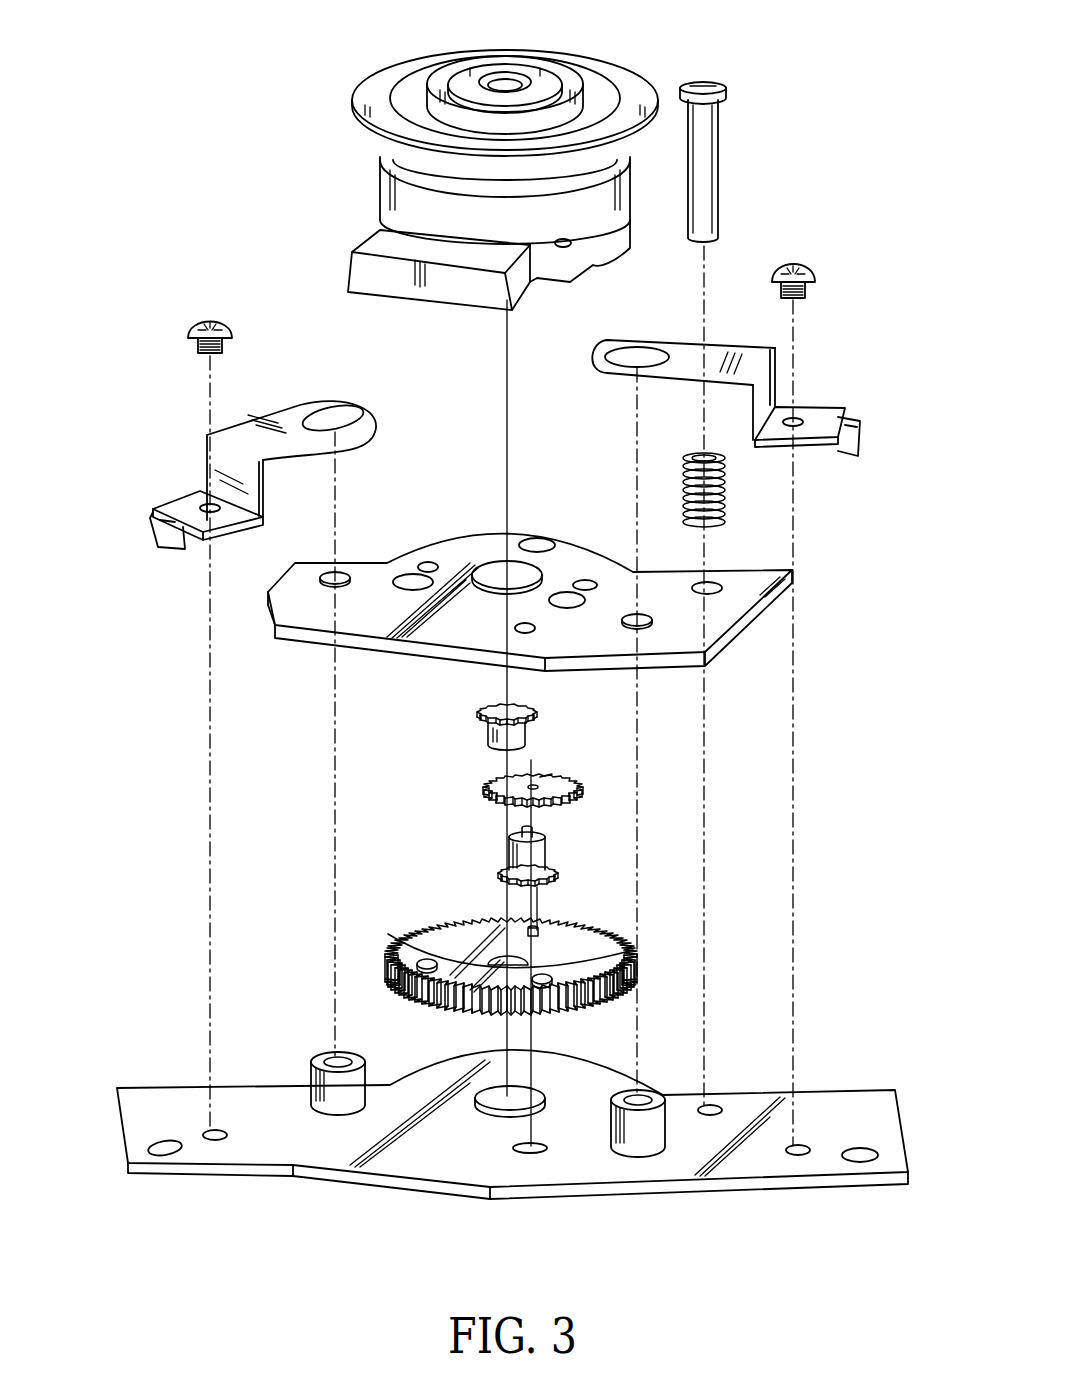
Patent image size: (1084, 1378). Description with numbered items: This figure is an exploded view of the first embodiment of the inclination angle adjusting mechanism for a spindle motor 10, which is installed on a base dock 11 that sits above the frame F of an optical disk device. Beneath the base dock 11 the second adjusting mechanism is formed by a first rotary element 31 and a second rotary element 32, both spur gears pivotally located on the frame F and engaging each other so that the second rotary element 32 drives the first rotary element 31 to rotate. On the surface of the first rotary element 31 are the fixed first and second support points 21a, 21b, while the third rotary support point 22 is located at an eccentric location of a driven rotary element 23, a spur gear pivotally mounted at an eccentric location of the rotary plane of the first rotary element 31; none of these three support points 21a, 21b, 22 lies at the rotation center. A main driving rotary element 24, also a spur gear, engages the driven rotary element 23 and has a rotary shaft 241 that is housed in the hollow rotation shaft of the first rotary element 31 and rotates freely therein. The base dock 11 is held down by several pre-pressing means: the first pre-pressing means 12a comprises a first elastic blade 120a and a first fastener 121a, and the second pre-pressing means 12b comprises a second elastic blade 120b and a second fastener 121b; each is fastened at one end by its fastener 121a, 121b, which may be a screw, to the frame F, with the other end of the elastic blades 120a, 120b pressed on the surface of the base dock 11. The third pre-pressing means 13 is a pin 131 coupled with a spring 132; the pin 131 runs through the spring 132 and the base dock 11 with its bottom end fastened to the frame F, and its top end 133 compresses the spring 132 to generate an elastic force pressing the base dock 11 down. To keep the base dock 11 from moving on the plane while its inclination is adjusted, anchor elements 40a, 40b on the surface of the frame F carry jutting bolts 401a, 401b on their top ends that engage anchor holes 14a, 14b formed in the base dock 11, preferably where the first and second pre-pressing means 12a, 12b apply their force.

The spindle motor 10 is at (397, 200).
The base dock 11 is at (790, 575).
The first pre-pressing means 12a is at (190, 458).
The second pre-pressing means 12b is at (806, 369).
The third pre-pressing means 13 is at (732, 118).
The anchor hole 14a is at (338, 572).
The anchor hole 14b is at (655, 620).
The first support point 21a is at (422, 963).
The second support point 21b is at (550, 980).
The third rotary support point 22 is at (550, 777).
The driven rotary element 23 is at (560, 781).
The main driving rotary element 24 is at (478, 703).
The first rotary element 31 is at (583, 944).
The second rotary element 32 is at (545, 853).
The anchor element 40a is at (310, 1067).
The anchor element 40b is at (662, 1097).
The first elastic blade 120a is at (195, 503).
The second elastic blade 120b is at (726, 352).
The first fastener 121a is at (206, 318).
The second fastener 121b is at (806, 265).
The pin 131 is at (708, 141).
The spring 132 is at (727, 500).
The top end 133 is at (700, 84).
The rotary shaft 241 is at (488, 738).
The jutting bolt 401a is at (334, 1056).
The jutting bolt 401b is at (638, 1094).
The frame F is at (860, 1107).